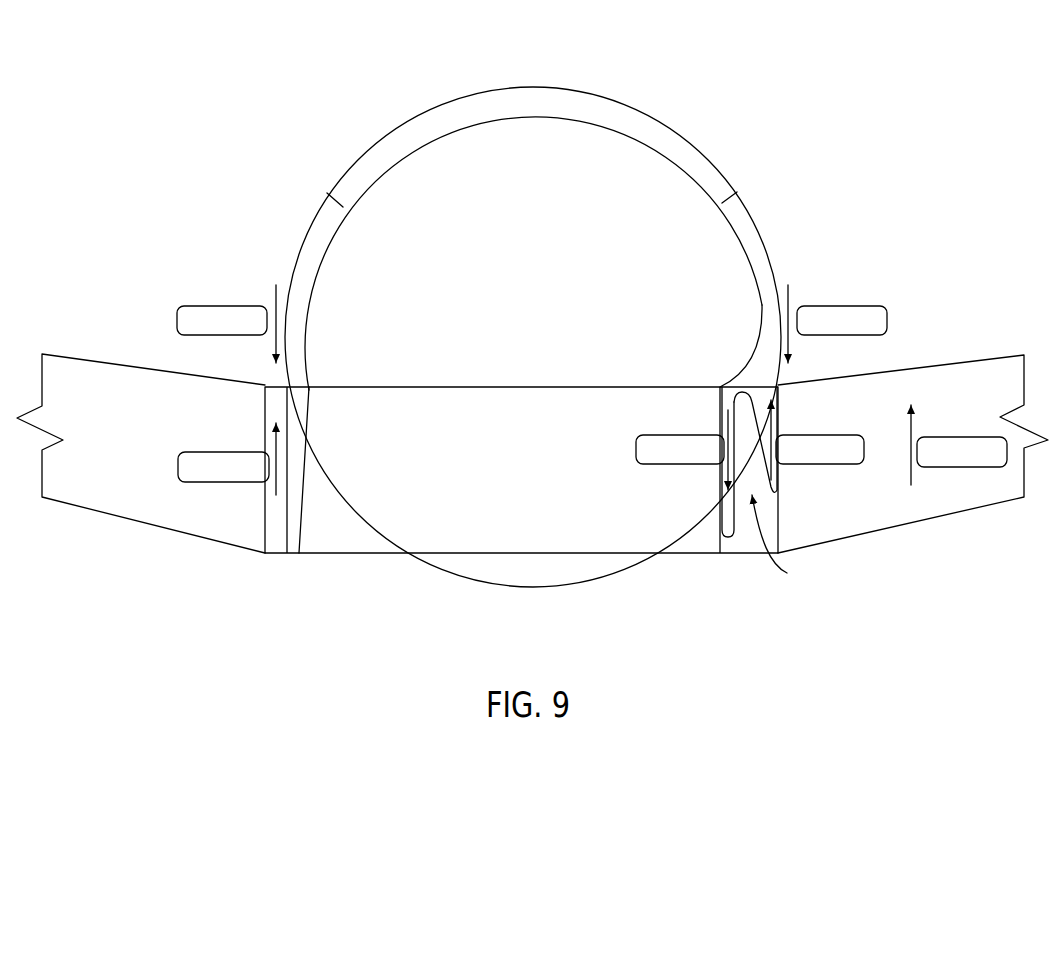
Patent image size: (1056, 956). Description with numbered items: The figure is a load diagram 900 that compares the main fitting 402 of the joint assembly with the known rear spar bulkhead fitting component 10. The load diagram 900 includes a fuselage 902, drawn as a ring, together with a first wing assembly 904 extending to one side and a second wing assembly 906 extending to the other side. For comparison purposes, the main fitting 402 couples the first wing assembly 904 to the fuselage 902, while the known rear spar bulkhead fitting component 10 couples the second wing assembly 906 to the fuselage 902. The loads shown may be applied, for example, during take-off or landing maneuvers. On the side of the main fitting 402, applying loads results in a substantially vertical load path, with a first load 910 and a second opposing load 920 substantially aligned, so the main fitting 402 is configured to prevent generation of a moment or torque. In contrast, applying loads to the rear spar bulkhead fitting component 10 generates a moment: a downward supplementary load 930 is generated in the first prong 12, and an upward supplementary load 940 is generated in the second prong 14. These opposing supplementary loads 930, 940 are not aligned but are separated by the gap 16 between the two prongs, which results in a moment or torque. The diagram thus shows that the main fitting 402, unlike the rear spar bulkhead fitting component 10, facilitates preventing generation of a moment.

The load diagram 900 is at (712, 85).
The fuselage 902 is at (515, 87).
The rear spar bulkhead fitting component 10 is at (755, 232).
The main fitting 402 is at (301, 384).
The first wing assembly 904 is at (75, 357).
The second wing assembly 906 is at (993, 357).
The first load 910 is at (200, 306).
The second opposing load 920 is at (198, 452).
The downward supplementary load 930 is at (652, 435).
The upward supplementary load 940 is at (820, 435).
The first prong 12 is at (727, 545).
The second prong 14 is at (773, 490).
The gap 16 is at (781, 541).